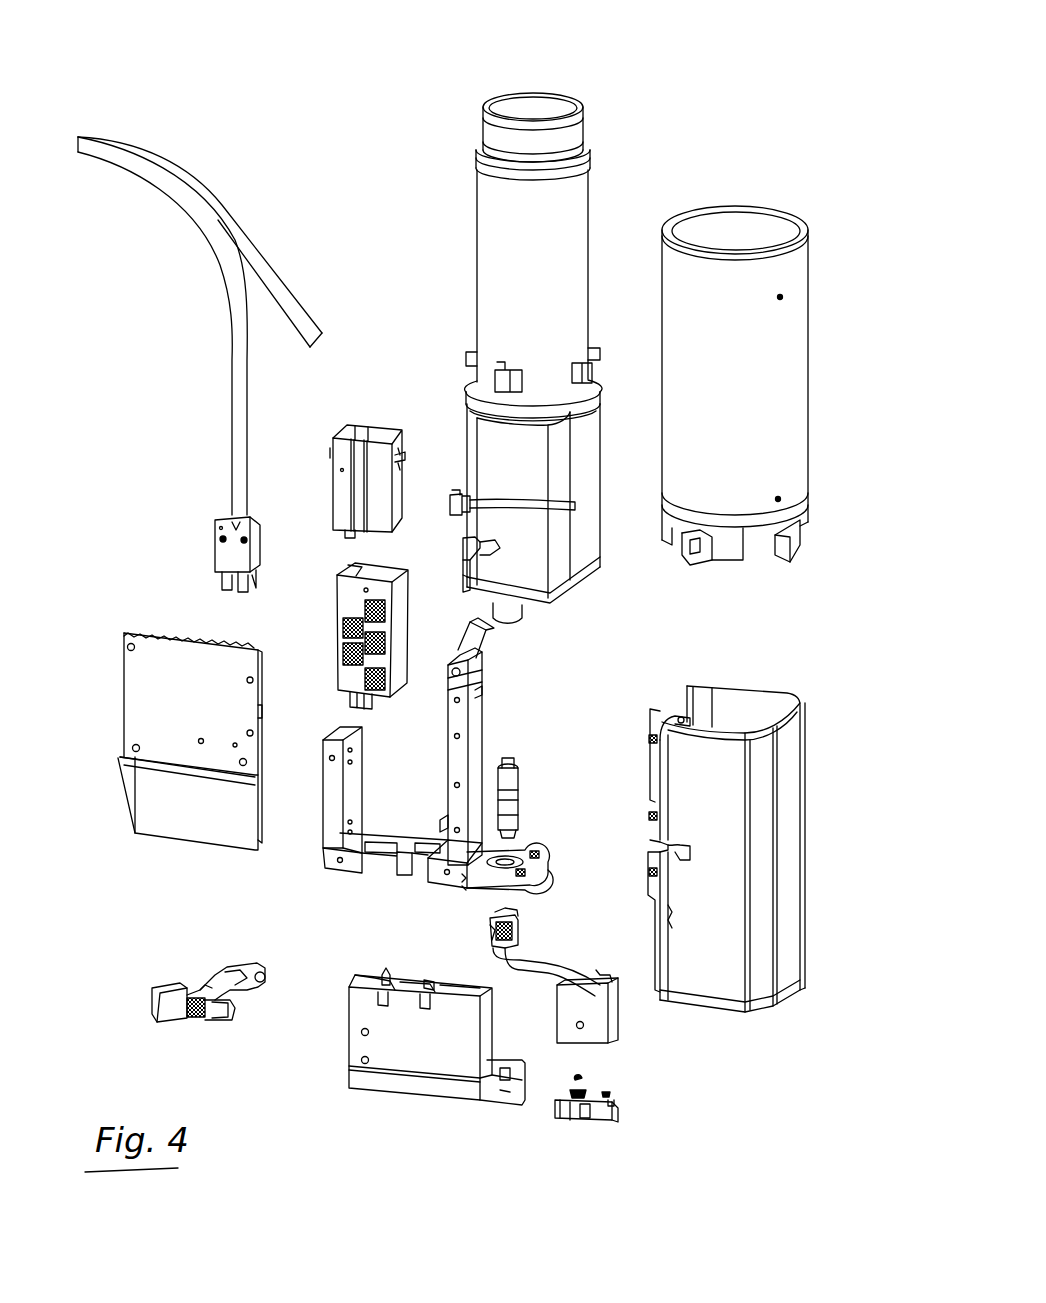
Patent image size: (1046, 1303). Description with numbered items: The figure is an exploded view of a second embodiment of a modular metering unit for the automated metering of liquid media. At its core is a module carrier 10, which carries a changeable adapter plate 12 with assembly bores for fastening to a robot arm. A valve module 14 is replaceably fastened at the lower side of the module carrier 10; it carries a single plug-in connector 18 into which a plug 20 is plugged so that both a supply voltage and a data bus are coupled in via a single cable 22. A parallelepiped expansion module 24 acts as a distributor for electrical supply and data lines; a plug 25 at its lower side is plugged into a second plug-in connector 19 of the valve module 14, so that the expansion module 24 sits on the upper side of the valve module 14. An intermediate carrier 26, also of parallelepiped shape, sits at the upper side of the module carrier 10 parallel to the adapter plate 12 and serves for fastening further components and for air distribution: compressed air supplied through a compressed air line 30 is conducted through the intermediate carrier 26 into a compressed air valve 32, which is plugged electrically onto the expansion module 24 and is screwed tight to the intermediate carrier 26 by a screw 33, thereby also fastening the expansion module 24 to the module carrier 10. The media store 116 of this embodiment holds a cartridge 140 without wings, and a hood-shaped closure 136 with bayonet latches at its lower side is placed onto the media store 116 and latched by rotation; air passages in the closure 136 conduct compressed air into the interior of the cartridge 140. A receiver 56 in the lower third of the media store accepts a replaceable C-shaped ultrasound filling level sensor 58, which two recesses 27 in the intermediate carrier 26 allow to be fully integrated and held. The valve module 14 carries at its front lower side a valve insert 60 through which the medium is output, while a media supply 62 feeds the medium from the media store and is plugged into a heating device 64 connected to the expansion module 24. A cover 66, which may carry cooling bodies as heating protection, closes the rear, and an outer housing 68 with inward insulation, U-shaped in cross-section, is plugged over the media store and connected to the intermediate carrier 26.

The module carrier 10 is at (438, 830).
The adapter plate 12 is at (350, 768).
The valve module 14 is at (436, 1046).
The plug-in connector 18 is at (386, 980).
The second plug-in connector 19 is at (428, 978).
The plug 20 is at (222, 556).
The cable 22 is at (226, 362).
The expansion module 24 is at (346, 600).
The plug 25 is at (352, 699).
The intermediate carrier 26 is at (482, 706).
The recesses 27 is at (415, 838).
The compressed air line 30 is at (255, 238).
The compressed air valve 32 is at (384, 465).
The screw 33 is at (412, 448).
The receiver 56 is at (478, 540).
The filling level sensor 58 is at (198, 990).
The valve insert 60 is at (592, 1112).
The media supply 62 is at (516, 790).
The heating device 64 is at (595, 1012).
The cover 66 is at (203, 712).
The outer housing 68 is at (722, 882).
The media store 116 is at (553, 238).
The closure 136 is at (783, 422).
The cartridge 140 is at (566, 134).